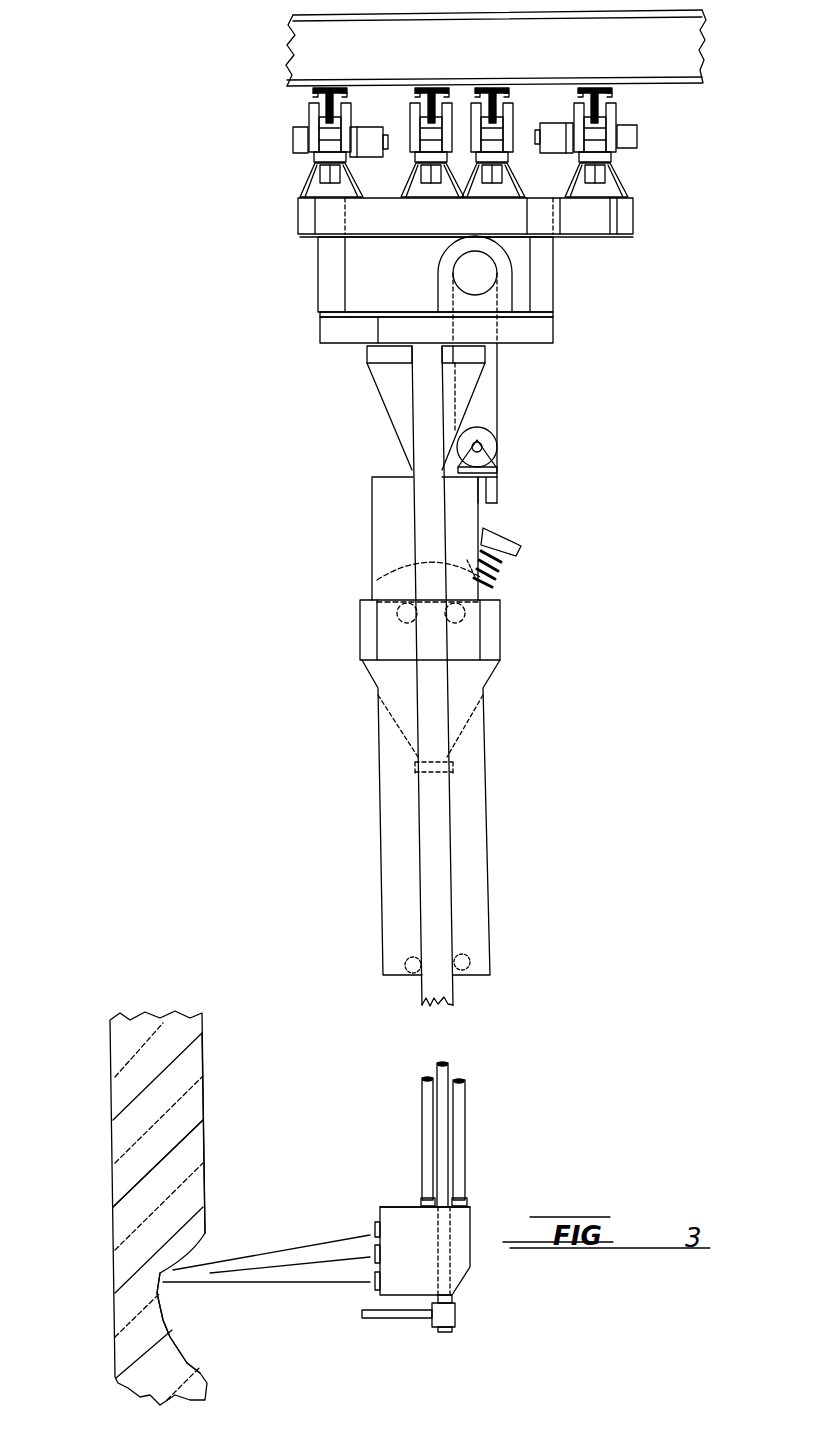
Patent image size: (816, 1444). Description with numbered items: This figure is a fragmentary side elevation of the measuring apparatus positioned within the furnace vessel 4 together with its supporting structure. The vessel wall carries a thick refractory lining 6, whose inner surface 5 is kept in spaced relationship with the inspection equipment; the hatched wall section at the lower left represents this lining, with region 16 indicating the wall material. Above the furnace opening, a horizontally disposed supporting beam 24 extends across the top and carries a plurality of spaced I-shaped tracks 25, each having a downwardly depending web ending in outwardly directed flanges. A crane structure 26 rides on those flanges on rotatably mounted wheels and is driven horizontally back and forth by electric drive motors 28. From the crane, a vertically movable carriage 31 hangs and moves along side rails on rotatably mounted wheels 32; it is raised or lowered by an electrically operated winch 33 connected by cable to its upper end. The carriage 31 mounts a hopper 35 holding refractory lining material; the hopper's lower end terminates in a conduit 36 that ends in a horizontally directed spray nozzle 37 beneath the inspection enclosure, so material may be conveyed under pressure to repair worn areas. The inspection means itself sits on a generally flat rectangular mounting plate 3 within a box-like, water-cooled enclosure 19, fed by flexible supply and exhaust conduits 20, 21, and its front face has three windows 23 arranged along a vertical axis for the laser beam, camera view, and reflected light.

The mounting plate 3 is at (458, 1233).
The furnace vessel 4 is at (110, 1120).
The inner surface 5 is at (198, 1090).
The furnace vessel lining 6 is at (170, 1335).
The wall material 16 is at (170, 1157).
The enclosure 19 is at (393, 1210).
The supply conduit 20 is at (462, 1183).
The exhaust conduit 21 is at (427, 1170).
The windows 23 is at (373, 1235).
The supporting beam 24 is at (675, 37).
The tracks 25 is at (330, 87).
The crane structure 26 is at (312, 112).
The electric drive motors 28 is at (553, 147).
The vertically movable carriage 31 is at (480, 887).
The wheels 32 is at (405, 964).
The winch 33 is at (453, 273).
The hopper 35 is at (360, 630).
The conduit 36 is at (444, 1135).
The spray nozzle 37 is at (400, 1318).